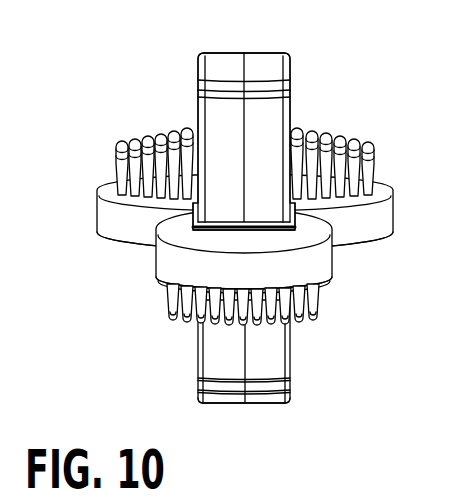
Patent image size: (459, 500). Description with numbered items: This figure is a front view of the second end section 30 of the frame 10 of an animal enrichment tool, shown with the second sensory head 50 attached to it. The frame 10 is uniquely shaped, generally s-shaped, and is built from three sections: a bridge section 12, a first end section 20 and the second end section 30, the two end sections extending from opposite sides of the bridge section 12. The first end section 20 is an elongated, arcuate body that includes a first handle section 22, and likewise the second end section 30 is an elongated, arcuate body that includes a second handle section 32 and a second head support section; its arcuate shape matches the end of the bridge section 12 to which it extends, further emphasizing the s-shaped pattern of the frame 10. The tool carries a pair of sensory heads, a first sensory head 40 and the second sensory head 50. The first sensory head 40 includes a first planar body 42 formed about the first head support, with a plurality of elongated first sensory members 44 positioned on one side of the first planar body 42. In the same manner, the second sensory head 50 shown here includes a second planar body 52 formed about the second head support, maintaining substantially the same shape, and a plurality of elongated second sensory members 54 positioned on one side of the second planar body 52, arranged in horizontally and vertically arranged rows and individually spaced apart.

The frame 10 is at (222, 243).
The bridge section 12 is at (287, 386).
The first end section 20 is at (293, 382).
The first handle section 22 is at (260, 403).
The second end section 30 is at (247, 122).
The second handle section 32 is at (200, 118).
The first sensory head 40 is at (202, 224).
The first planar body 42 is at (113, 242).
The first sensory members 44 is at (112, 173).
The second sensory head 50 is at (239, 270).
The second planar body 52 is at (153, 273).
The second sensory members 54 is at (318, 298).